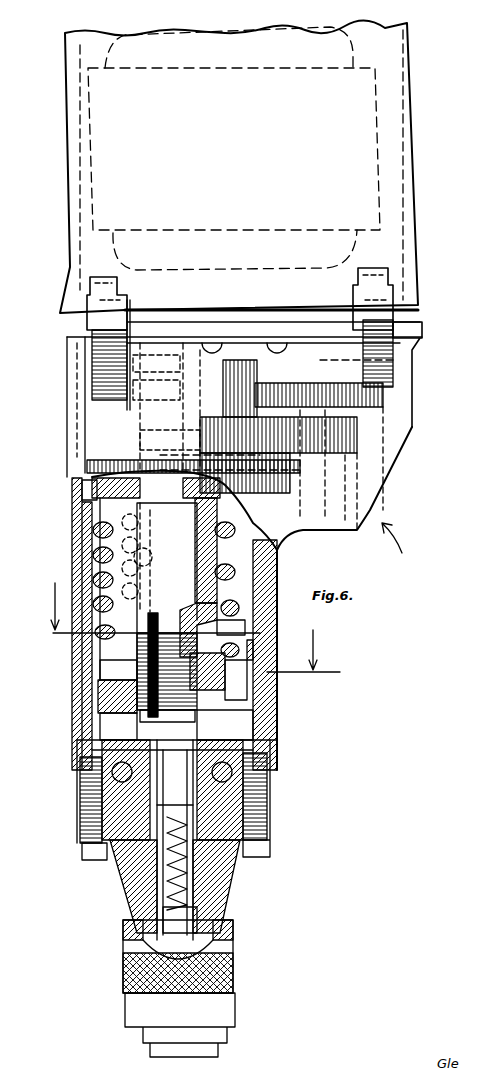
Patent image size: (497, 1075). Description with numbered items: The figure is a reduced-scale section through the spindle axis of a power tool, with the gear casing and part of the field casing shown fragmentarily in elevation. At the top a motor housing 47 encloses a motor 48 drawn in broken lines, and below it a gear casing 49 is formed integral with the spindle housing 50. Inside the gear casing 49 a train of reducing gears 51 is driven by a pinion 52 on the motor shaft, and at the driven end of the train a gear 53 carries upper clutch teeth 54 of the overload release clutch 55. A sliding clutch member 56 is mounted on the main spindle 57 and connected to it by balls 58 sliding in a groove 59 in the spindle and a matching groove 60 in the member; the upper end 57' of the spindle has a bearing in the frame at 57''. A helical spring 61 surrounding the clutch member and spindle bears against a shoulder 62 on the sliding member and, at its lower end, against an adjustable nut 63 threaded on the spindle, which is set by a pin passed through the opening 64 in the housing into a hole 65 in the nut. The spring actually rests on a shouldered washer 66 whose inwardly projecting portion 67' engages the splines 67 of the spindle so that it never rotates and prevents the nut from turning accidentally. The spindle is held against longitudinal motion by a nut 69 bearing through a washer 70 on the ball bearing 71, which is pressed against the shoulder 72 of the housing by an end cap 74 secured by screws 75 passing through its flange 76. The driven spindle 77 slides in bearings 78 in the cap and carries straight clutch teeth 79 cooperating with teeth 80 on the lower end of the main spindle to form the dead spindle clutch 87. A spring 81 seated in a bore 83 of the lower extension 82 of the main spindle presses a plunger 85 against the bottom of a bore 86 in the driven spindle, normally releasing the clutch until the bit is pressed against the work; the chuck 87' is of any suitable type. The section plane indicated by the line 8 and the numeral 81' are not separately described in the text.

The motor housing 47 is at (413, 150).
The motor 48 is at (378, 117).
The gear casing 49 is at (413, 370).
The spindle housing 50 is at (273, 587).
The train of reducing gears 51 is at (353, 413).
The pinion 52 is at (213, 406).
The gear 53 is at (100, 460).
The upper clutch teeth 54 is at (215, 461).
The overload release clutch 55 is at (72, 503).
The sliding clutch member 56 is at (65, 568).
The main spindle 57 is at (177, 604).
The upper end of spindle 57' is at (136, 365).
The bearing in the frame 57'' is at (156, 390).
The balls 58 is at (152, 557).
The groove 59 is at (153, 595).
The groove 60 is at (65, 596).
The helical spring 61 is at (223, 567).
The shoulder 62 is at (234, 532).
The adjustable nut 63 is at (100, 703).
The opening 64 is at (273, 700).
The hole 65 is at (267, 720).
The shouldered washer 66 is at (267, 688).
The splines 67 is at (212, 619).
The inwardly projecting portion 67' is at (259, 615).
The nut 69 is at (120, 738).
The washer 70 is at (87, 762).
The ball bearing 71 is at (108, 777).
The shoulder 72 is at (273, 737).
The end cap 74 is at (237, 877).
The screws 75 is at (270, 843).
The flange 76 is at (270, 828).
The driven spindle 77 is at (147, 883).
The bearings 78 is at (133, 873).
The clutch teeth 79 is at (243, 860).
The teeth 80 is at (270, 780).
The spring 81 is at (265, 904).
The port 81' is at (101, 918).
The lower extension 82 is at (137, 937).
The bore 83 is at (223, 897).
The plunger 85 is at (180, 922).
The bore 86 is at (163, 947).
The dead spindle clutch 87 is at (93, 873).
The chuck 87' is at (192, 1026).
The section line 8 is at (194, 631).